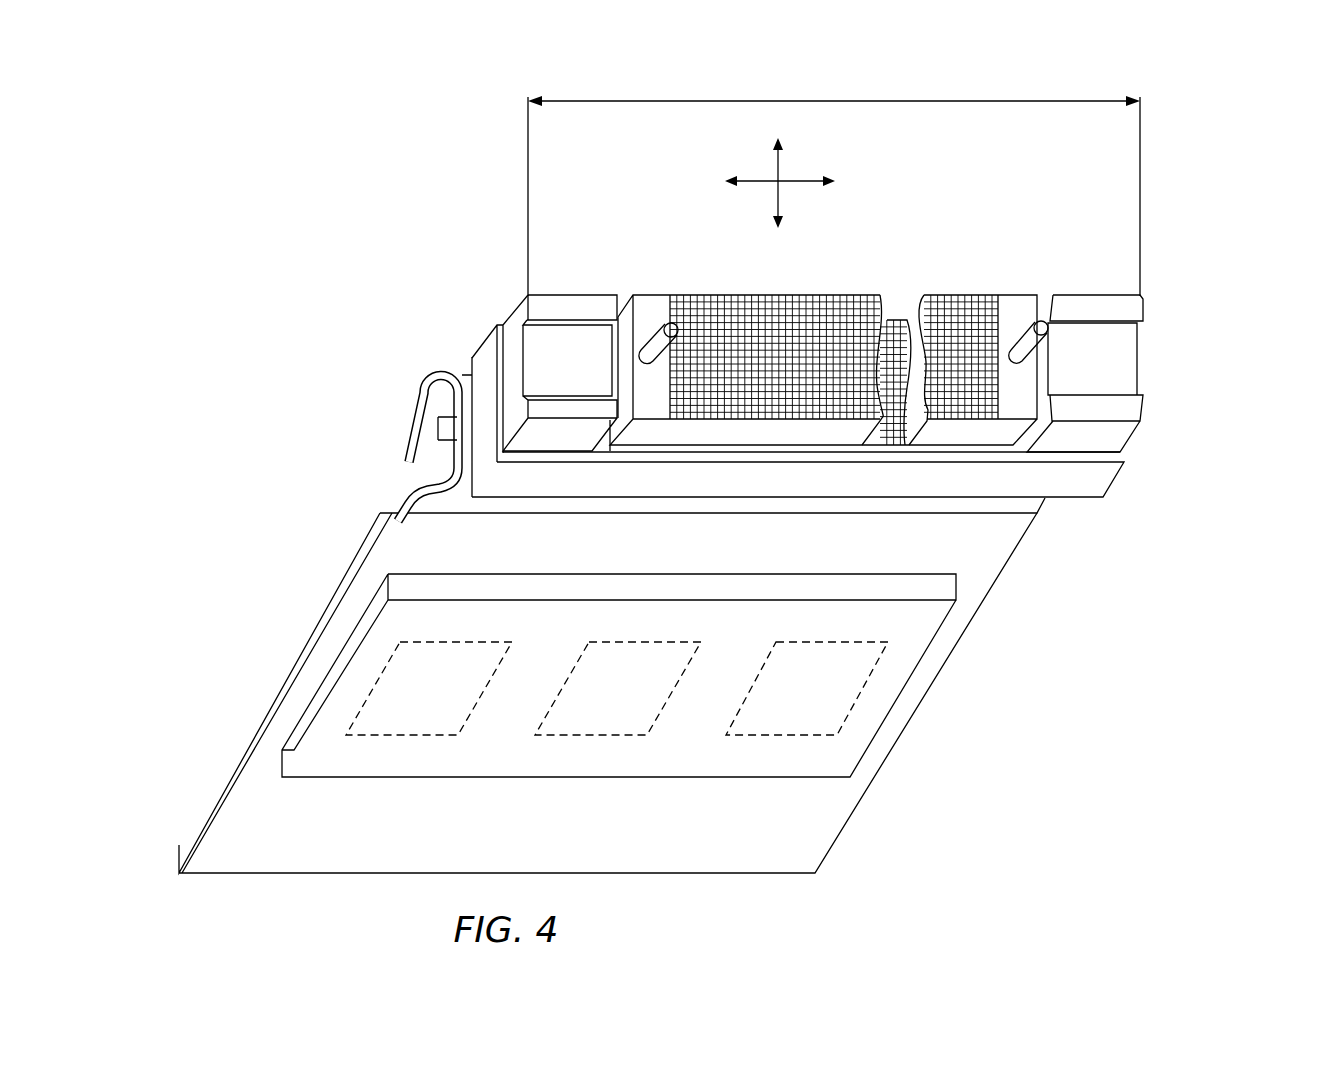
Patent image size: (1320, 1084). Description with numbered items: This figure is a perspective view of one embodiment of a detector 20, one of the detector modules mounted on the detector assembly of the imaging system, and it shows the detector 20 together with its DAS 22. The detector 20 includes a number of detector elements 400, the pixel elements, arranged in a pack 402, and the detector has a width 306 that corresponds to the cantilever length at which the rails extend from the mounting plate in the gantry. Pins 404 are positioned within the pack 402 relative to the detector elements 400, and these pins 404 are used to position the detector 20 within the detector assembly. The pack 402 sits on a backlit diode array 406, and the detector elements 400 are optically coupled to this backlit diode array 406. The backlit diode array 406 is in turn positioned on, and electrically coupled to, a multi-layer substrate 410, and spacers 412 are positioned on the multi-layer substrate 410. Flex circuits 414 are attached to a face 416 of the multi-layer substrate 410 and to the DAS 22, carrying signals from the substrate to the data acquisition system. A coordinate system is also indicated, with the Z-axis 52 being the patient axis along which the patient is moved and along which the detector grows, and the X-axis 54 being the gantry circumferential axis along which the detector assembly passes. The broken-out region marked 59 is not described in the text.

The detector 20 is at (1130, 172).
The DAS 22 is at (907, 698).
The Z-axis 52 is at (800, 185).
The X-axis 54 is at (775, 170).
The grid section break 59 is at (906, 296).
The width 306 is at (925, 103).
The detector elements 400 is at (755, 298).
The pack 402 is at (669, 250).
The pins 404 is at (1011, 296).
The backlit diode array 406 is at (997, 450).
The multi-layer substrate 410 is at (1103, 480).
The spacers 412 is at (563, 296).
The flex circuits 414 is at (418, 408).
The face 416 is at (470, 362).